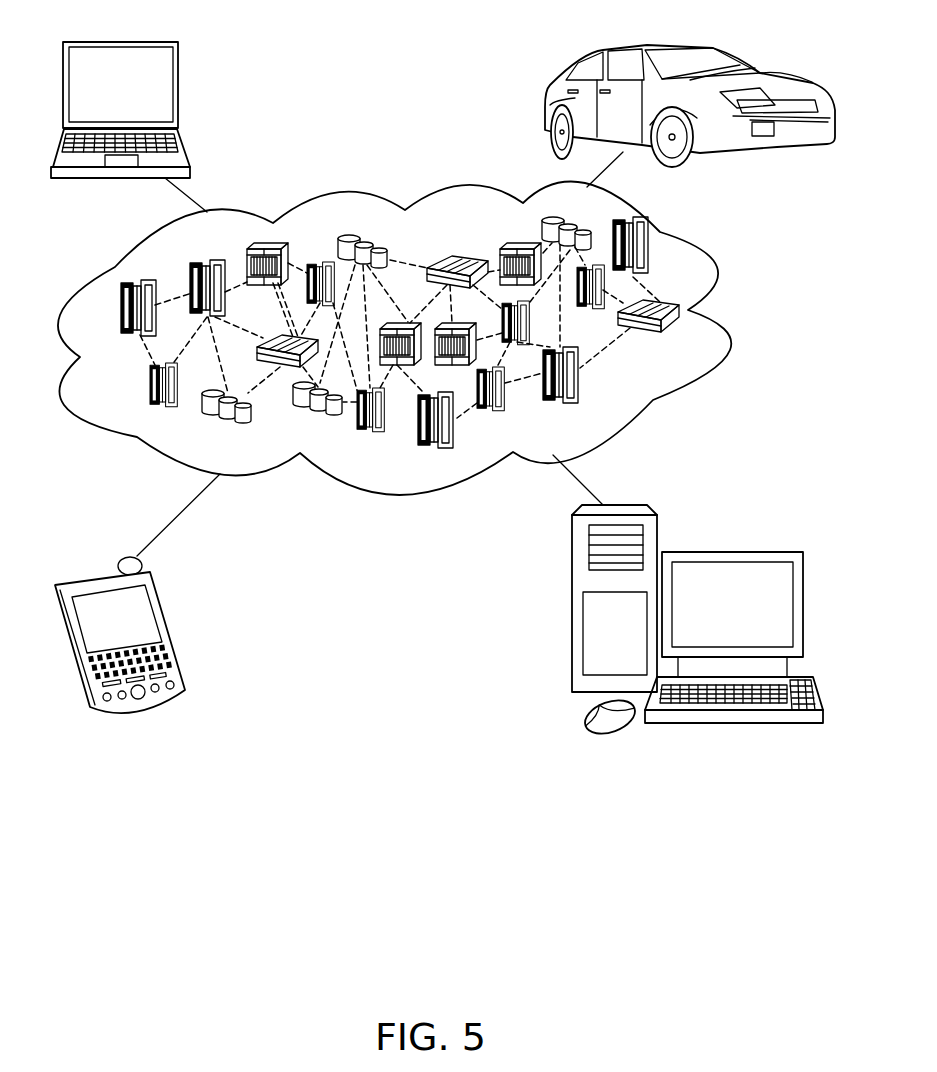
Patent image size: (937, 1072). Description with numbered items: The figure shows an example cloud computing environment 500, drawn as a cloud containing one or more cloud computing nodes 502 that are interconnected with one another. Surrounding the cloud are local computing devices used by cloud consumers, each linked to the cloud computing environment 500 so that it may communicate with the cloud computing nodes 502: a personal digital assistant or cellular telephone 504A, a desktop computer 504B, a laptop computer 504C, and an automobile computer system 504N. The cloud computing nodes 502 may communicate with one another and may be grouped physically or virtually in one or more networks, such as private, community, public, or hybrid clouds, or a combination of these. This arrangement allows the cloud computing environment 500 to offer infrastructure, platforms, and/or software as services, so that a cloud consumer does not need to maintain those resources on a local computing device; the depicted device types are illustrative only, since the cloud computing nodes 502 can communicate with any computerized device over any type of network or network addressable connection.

The cloud computing environment 500 is at (715, 302).
The cloud computing nodes 502 is at (685, 341).
The personal digital assistant (PDA) or cellular telephone 504A is at (160, 600).
The desktop computer 504B is at (722, 552).
The laptop computer 504C is at (178, 70).
The automobile computer system 504N is at (546, 105).